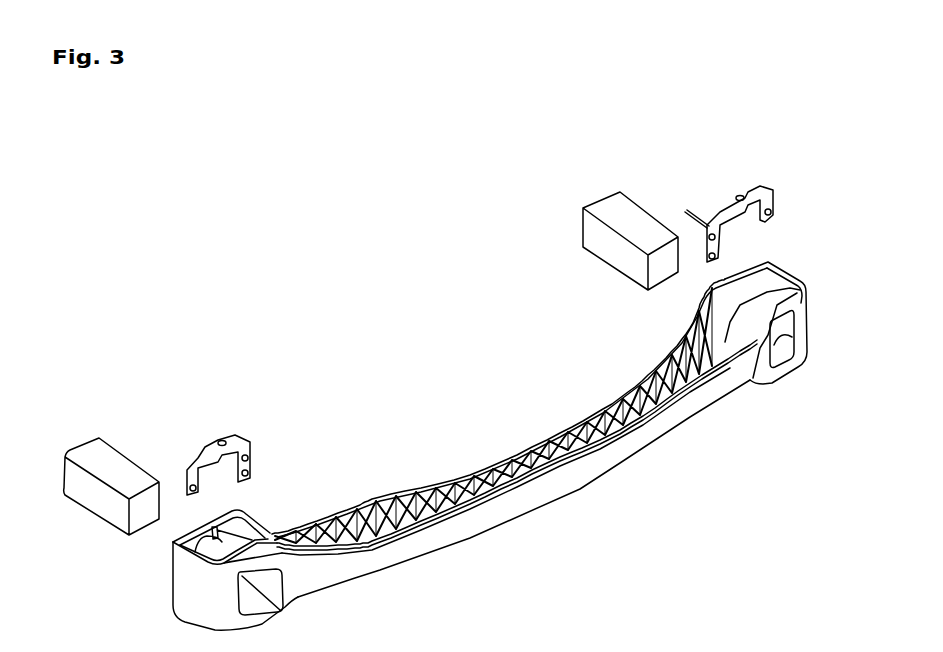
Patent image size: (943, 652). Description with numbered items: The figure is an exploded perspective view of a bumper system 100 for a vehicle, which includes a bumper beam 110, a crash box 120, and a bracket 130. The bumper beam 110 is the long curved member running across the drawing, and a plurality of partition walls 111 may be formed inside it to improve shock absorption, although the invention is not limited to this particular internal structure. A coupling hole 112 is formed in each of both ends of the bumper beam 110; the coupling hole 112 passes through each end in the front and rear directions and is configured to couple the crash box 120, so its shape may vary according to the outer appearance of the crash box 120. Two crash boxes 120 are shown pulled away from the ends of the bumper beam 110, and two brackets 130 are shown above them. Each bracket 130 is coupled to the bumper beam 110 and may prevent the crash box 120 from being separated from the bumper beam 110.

The bumper system 100 is at (279, 243).
The bumper beam 110 is at (504, 446).
The partition walls 111 is at (383, 511).
The coupling hole 112 is at (776, 348).
The crash box 120 is at (610, 201).
The bracket 130 is at (772, 197).